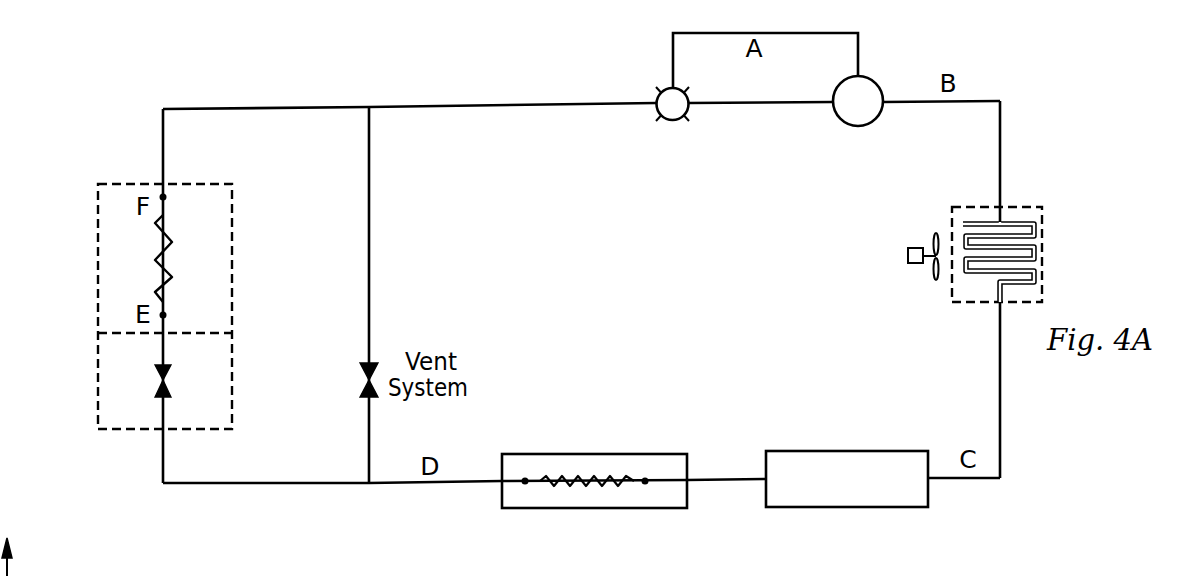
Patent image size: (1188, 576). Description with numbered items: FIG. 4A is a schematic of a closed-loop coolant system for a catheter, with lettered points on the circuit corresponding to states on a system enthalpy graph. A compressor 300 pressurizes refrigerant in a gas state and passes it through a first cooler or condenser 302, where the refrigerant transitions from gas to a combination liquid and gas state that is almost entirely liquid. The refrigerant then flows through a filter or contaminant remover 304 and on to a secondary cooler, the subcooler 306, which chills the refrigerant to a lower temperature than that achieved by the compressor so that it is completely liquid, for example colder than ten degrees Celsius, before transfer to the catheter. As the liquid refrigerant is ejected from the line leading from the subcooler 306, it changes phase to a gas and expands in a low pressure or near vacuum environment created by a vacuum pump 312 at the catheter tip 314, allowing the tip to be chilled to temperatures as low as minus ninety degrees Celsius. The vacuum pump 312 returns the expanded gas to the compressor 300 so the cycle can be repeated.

The compressor 300 is at (834, 94).
The condenser 302 is at (952, 298).
The contaminant remover 304 is at (840, 451).
The subcooler 306 is at (655, 454).
The vacuum pump 312 is at (661, 87).
The catheter tip 314 is at (220, 184).